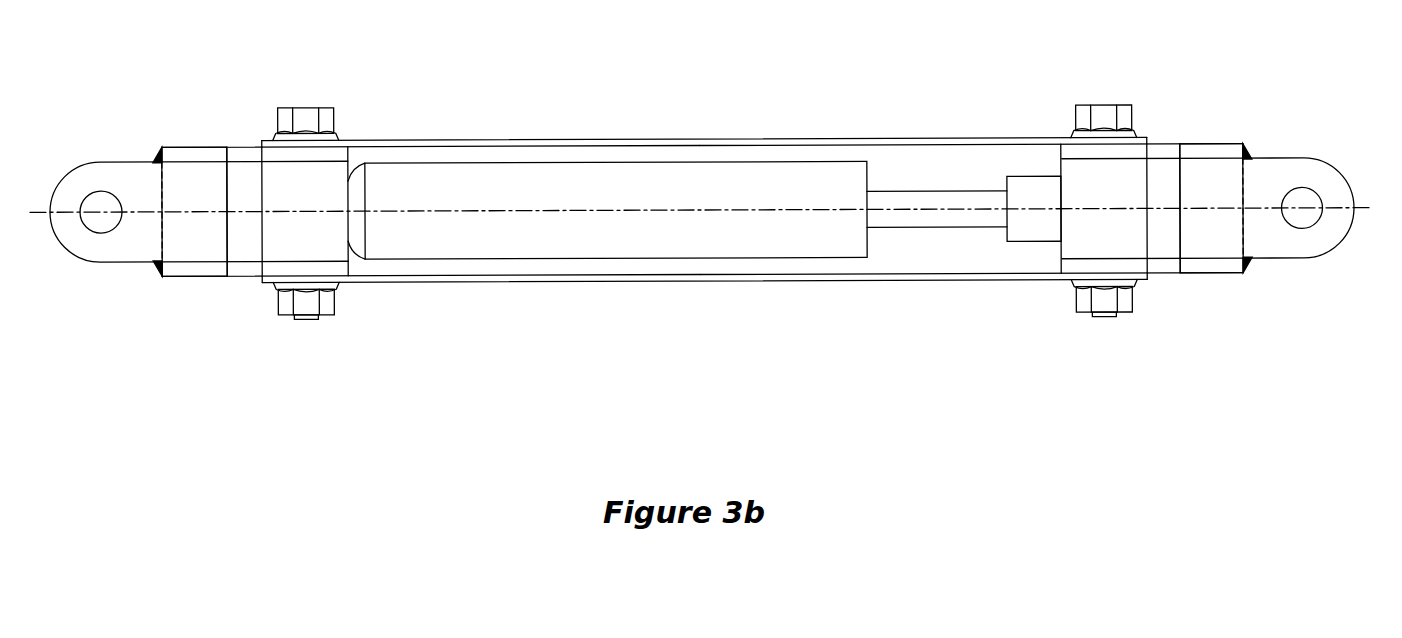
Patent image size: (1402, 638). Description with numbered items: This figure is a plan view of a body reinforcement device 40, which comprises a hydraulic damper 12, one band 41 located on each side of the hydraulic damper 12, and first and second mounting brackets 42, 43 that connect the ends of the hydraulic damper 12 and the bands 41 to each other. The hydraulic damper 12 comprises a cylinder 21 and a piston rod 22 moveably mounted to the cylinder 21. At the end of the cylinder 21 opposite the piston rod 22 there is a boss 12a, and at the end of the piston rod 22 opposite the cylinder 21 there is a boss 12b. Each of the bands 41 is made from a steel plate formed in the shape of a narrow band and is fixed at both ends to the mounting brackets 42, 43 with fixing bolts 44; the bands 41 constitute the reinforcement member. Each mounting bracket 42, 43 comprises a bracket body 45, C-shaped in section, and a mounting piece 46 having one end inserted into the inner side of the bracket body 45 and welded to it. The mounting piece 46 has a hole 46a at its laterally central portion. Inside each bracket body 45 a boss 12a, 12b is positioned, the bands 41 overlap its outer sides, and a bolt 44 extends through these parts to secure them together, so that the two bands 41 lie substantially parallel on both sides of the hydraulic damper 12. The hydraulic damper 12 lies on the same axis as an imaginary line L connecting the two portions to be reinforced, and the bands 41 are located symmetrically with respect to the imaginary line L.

The hydraulic damper 12 is at (704, 220).
The boss 12a is at (307, 247).
The boss 12b is at (1107, 235).
The cylinder 21 is at (710, 240).
The piston rod 22 is at (927, 227).
The body reinforcement device 40 is at (700, 194).
The band 41 is at (960, 138).
The first mounting bracket 42 is at (1196, 288).
The second mounting bracket 43 is at (191, 288).
The fixing bolt 44 is at (306, 106).
The bracket body 45 is at (205, 146).
The mounting piece 46 is at (115, 268).
The hole 46a is at (112, 222).
The imaginary line L is at (415, 210).